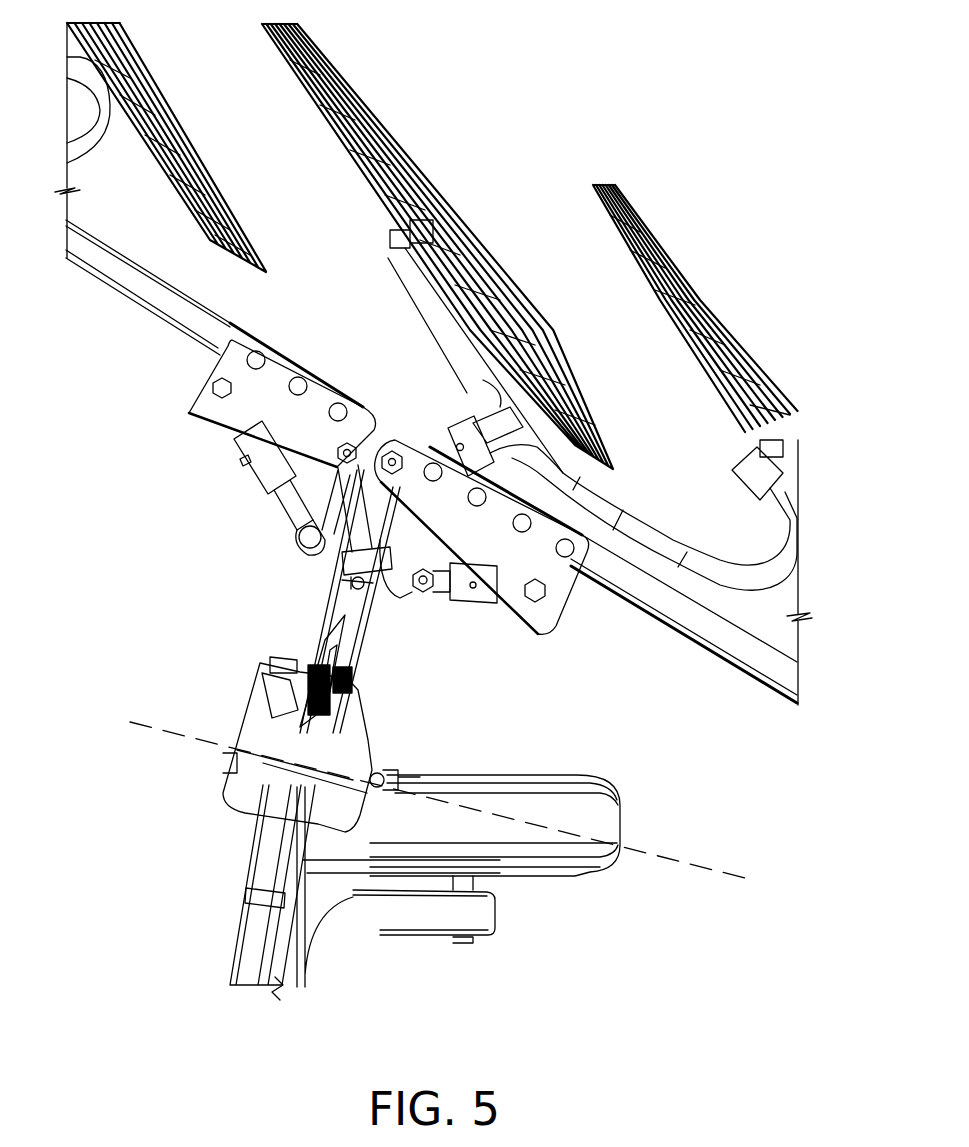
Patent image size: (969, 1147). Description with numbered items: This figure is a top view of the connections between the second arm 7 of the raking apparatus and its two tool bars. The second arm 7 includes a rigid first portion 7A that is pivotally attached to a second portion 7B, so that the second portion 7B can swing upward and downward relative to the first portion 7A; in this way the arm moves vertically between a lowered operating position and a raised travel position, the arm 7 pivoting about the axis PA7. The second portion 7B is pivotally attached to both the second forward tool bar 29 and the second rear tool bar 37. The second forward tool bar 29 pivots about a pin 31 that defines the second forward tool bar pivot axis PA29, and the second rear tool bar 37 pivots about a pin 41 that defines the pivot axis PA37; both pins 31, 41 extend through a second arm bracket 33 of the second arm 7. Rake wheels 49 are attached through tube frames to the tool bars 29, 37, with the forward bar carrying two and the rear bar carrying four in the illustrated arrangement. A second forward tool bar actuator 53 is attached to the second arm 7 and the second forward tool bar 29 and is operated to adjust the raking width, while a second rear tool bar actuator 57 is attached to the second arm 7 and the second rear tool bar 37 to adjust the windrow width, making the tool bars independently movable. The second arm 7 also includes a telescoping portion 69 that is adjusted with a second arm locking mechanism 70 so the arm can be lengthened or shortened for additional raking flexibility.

The second arm 7 is at (377, 632).
The rigid first portion 7A is at (257, 850).
The second portion 7B is at (330, 610).
The second forward tool bar 29 is at (214, 305).
The pin 31 is at (347, 445).
The second arm bracket 33 is at (342, 560).
The second rear tool bar 37 is at (660, 627).
The pin 41 is at (443, 440).
The rake wheels 49 is at (518, 326).
The second forward tool bar actuator 53 is at (240, 445).
The second rear tool bar actuator 57 is at (473, 605).
The telescoping portion 69 is at (400, 575).
The second arm locking mechanism 70 is at (373, 597).
The pivot axis of wheel strut PA7 is at (673, 858).
The second forward tool bar pivot axis PA29 is at (335, 462).
The pivot axis PA37 is at (392, 450).